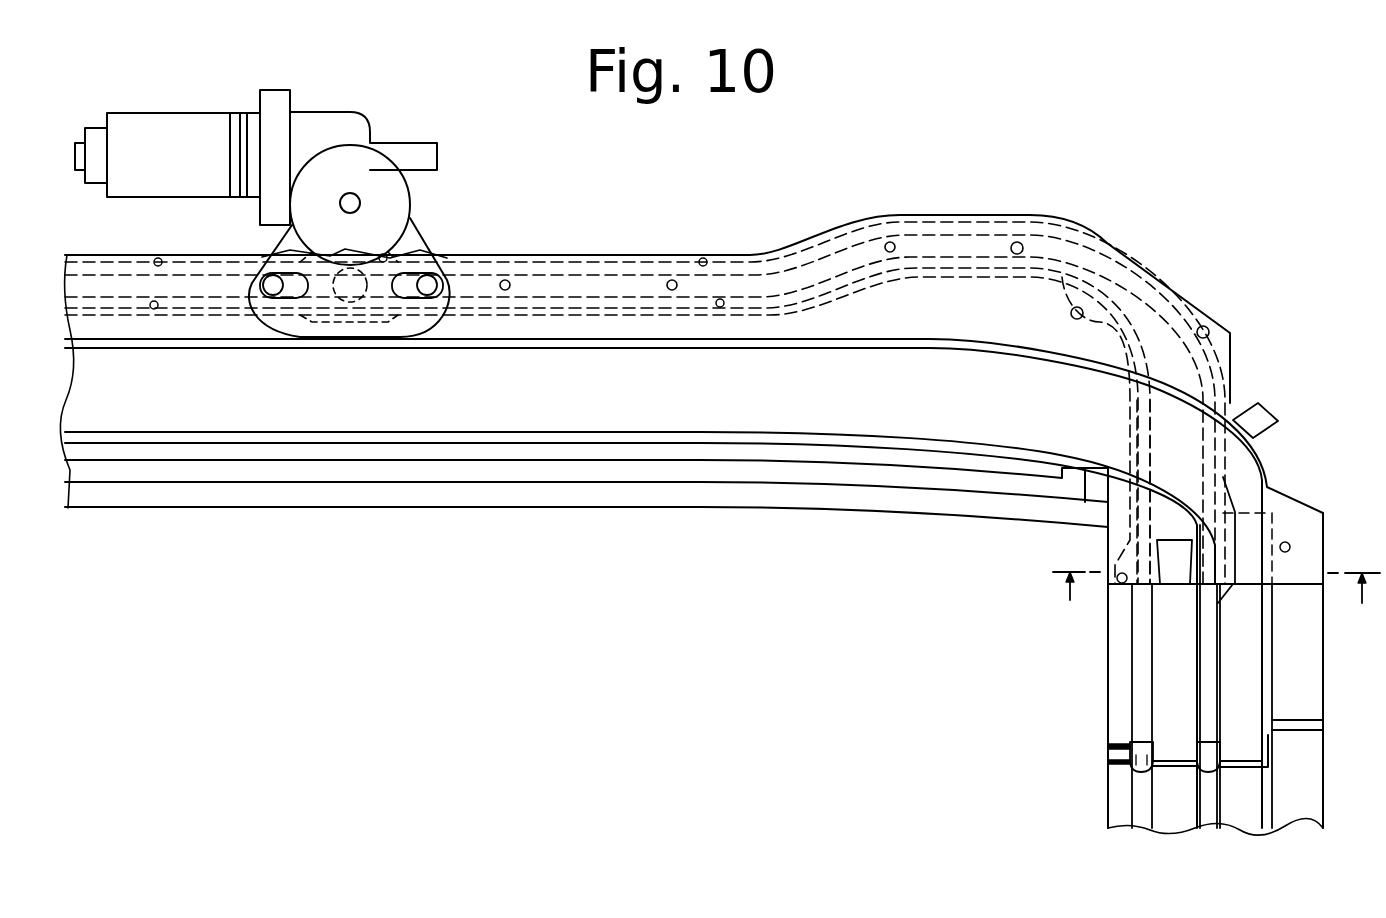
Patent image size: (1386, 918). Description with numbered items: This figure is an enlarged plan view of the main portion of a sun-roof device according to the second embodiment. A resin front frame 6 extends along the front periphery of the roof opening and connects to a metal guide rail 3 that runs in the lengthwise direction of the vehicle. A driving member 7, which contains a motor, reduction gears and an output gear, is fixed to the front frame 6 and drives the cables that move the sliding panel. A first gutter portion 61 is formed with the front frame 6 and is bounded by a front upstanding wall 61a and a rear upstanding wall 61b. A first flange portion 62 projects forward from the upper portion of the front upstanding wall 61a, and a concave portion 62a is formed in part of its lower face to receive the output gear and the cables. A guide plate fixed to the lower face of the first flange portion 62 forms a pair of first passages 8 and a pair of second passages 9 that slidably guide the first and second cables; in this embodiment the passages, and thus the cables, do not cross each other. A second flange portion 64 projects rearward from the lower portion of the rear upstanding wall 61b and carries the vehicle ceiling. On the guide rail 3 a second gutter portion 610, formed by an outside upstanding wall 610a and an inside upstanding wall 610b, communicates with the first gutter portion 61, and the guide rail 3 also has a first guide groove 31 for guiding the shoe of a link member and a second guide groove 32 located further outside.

The driving member 7 is at (191, 106).
The second passage 9 is at (161, 258).
The concave portion 62a is at (386, 255).
The front upstanding wall 61a is at (566, 346).
The first flange portion 62 is at (813, 258).
The first passage 8 is at (153, 309).
The rear upstanding wall 61b is at (273, 438).
The second flange portion 64 is at (403, 472).
The first gutter portion 61 is at (605, 420).
The front frame 6 is at (803, 512).
The guide rail 3 is at (1104, 634).
The outside upstanding wall 610a is at (1265, 655).
The second gutter portion 610 is at (1237, 688).
The inside upstanding wall 610b is at (1215, 713).
The second guide groove 32 is at (1140, 772).
The first guide groove 31 is at (1200, 779).